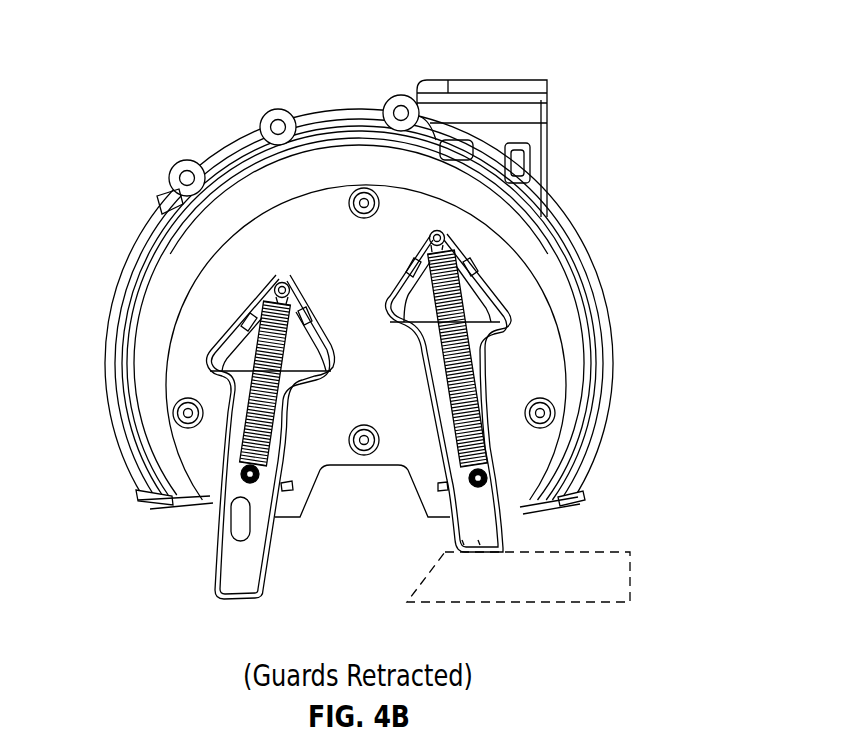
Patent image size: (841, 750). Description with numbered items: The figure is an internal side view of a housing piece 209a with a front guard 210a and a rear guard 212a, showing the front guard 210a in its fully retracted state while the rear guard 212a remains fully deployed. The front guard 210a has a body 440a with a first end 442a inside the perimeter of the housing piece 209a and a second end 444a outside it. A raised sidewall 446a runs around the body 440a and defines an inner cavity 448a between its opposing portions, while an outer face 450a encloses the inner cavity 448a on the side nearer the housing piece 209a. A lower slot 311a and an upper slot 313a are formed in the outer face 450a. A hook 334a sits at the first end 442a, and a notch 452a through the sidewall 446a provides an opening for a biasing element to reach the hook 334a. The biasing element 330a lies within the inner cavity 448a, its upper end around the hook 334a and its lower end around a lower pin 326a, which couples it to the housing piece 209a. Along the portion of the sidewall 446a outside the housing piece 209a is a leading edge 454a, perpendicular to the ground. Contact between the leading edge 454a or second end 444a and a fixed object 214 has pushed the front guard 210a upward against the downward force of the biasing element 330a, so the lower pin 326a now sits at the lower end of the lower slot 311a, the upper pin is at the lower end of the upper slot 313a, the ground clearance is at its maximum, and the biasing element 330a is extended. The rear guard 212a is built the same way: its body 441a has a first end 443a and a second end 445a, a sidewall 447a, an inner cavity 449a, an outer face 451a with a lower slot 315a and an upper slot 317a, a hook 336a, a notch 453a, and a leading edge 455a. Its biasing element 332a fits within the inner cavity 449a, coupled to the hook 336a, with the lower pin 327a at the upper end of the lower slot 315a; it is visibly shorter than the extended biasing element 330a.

The housing piece 209a is at (553, 220).
The front guard 210a is at (548, 252).
The rear guard 212a is at (215, 326).
The fixed object 214 is at (631, 575).
The lower slot 311a is at (497, 504).
The upper slot 313a is at (541, 284).
The lower slot 315a is at (237, 525).
The upper slot 317a is at (221, 366).
The lower pin 326a is at (527, 506).
The lower pin 327a is at (211, 496).
The biasing element 330a is at (490, 478).
The biasing element 332a is at (242, 477).
The hook 334a is at (463, 250).
The hook 336a is at (190, 164).
The body 440a is at (452, 547).
The body 441a is at (260, 578).
The first end 442a is at (432, 226).
The first end 443a is at (288, 270).
The second end 444a is at (481, 531).
The second end 445a is at (227, 607).
The sidewall 446a is at (507, 316).
The sidewall 447a is at (239, 428).
The inner cavity 448a is at (498, 542).
The inner cavity 449a is at (218, 592).
The outer face 450a is at (454, 539).
The outer face 451a is at (278, 513).
The notch 452a is at (500, 282).
The notch 453a is at (248, 296).
The leading edge 454a is at (508, 552).
The leading edge 455a is at (241, 577).